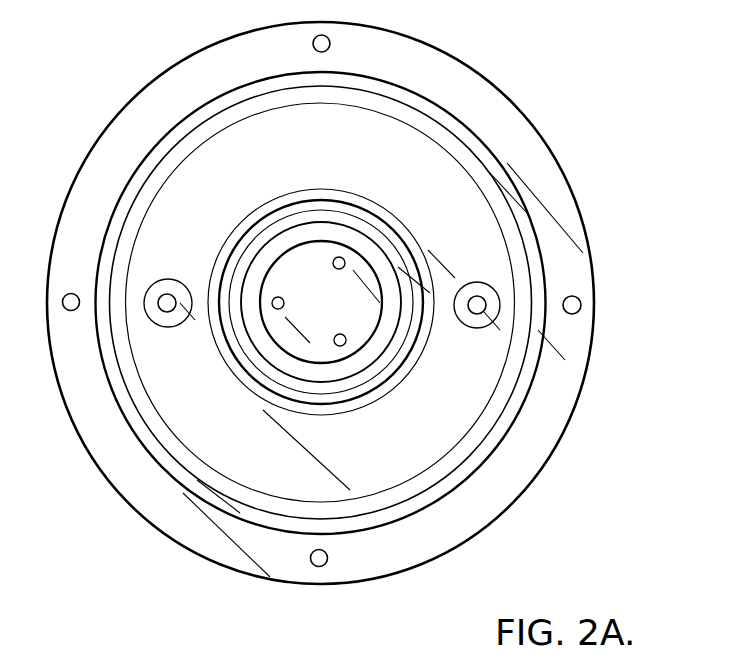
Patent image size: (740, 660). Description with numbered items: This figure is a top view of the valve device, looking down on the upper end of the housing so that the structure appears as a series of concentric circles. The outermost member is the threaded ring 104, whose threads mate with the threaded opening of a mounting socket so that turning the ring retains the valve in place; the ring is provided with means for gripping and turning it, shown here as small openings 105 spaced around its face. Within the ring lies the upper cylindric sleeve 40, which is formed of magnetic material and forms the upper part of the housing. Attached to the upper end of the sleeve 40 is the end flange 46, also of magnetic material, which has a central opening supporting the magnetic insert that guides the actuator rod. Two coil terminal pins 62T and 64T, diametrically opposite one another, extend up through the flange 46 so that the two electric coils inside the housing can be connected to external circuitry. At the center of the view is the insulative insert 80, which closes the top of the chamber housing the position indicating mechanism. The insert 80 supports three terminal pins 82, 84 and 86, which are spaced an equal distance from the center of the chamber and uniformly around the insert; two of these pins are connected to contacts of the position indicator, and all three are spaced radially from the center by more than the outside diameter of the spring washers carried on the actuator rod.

The threaded ring 104 is at (502, 113).
The mounting bolt hole 105 is at (581, 305).
The upper cylindric sleeve 40 is at (480, 172).
The end flange 46 is at (320, 160).
The insulative insert 80 is at (318, 314).
The terminal pin 82 is at (276, 298).
The terminal pin 84 is at (333, 263).
The terminal pin 86 is at (337, 335).
The coil terminal pin 64T is at (167, 306).
The coil terminal pin 62T is at (475, 313).